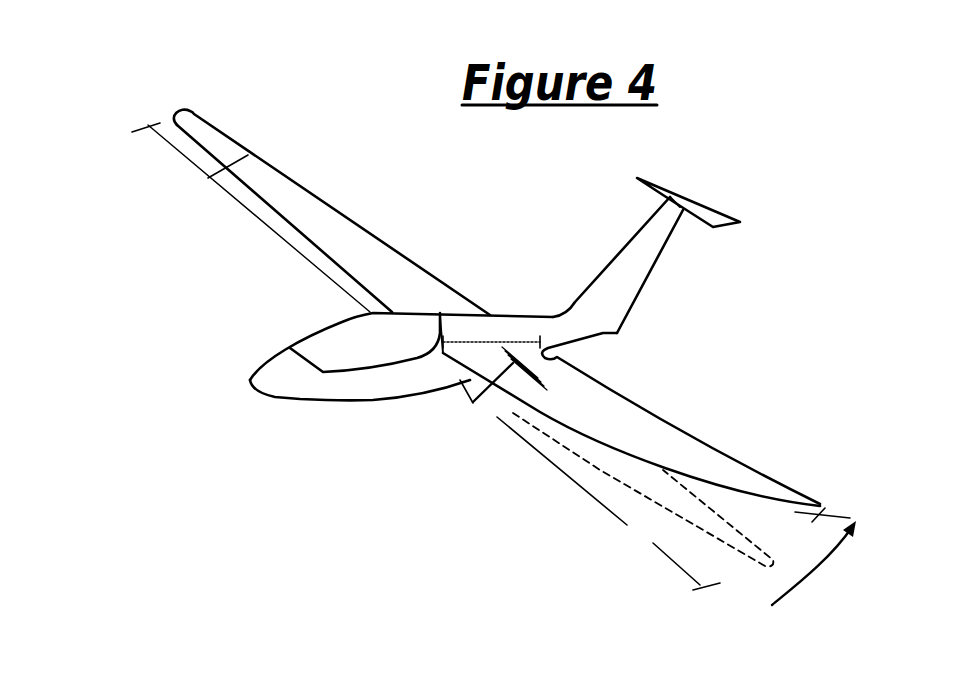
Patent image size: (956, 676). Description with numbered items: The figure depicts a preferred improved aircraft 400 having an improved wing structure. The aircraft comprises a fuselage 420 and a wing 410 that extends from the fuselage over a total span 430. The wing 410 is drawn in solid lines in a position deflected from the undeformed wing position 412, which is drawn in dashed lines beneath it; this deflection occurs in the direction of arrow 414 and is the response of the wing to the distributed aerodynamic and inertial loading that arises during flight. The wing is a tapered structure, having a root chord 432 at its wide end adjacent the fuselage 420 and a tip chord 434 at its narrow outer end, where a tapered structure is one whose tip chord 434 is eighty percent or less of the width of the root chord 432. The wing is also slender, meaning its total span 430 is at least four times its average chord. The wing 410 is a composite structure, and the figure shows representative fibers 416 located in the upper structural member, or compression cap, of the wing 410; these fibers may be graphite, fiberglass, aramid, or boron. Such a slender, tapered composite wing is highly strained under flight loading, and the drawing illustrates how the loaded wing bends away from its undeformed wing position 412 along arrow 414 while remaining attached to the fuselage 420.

The aircraft 400 is at (207, 277).
The wing 410 is at (693, 437).
The undeformed wing position 412 is at (627, 525).
The arrow 414 is at (797, 588).
The representative fibers 416 is at (473, 403).
The fuselage 420 is at (323, 402).
The total span 430 is at (262, 147).
The root chord 432 is at (483, 340).
The tip chord 434 is at (827, 503).